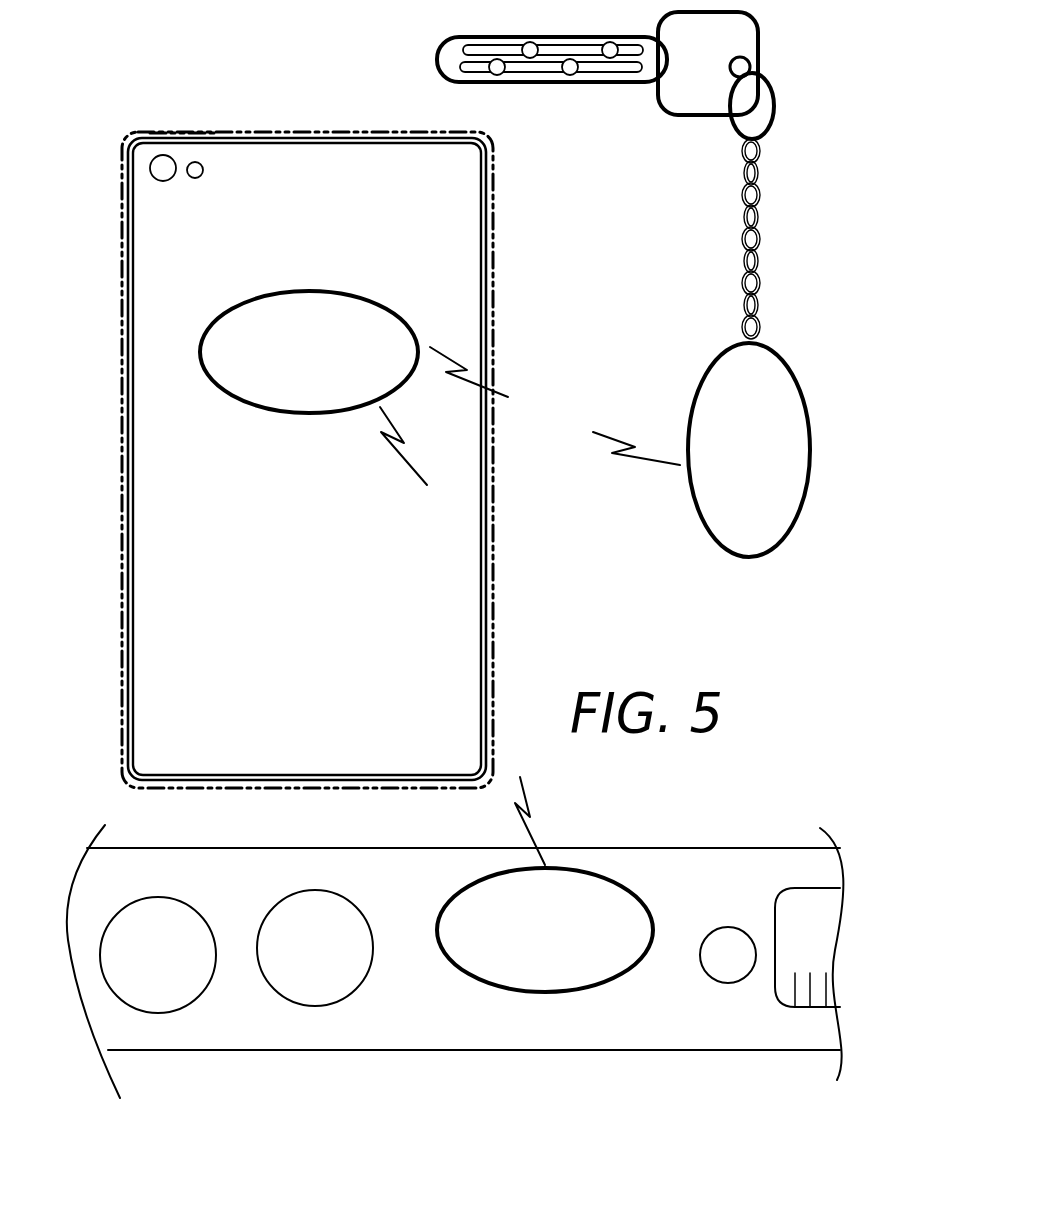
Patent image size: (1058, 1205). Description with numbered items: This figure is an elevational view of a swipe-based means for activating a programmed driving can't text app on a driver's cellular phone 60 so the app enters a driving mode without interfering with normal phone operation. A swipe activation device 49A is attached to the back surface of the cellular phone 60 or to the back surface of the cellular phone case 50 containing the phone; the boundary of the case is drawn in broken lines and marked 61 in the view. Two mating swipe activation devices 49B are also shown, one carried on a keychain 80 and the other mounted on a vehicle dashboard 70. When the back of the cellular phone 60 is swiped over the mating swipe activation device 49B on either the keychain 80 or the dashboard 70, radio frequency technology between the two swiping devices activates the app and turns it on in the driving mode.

The cellular phone case 50 is at (123, 137).
The cellular phone 60 is at (128, 203).
The case boundary 61 is at (182, 135).
The swipe activation device 49A is at (215, 325).
The keychain 80 is at (745, 230).
The mating swipe activation device 49B is at (730, 548).
The dashboard 70 is at (720, 860).